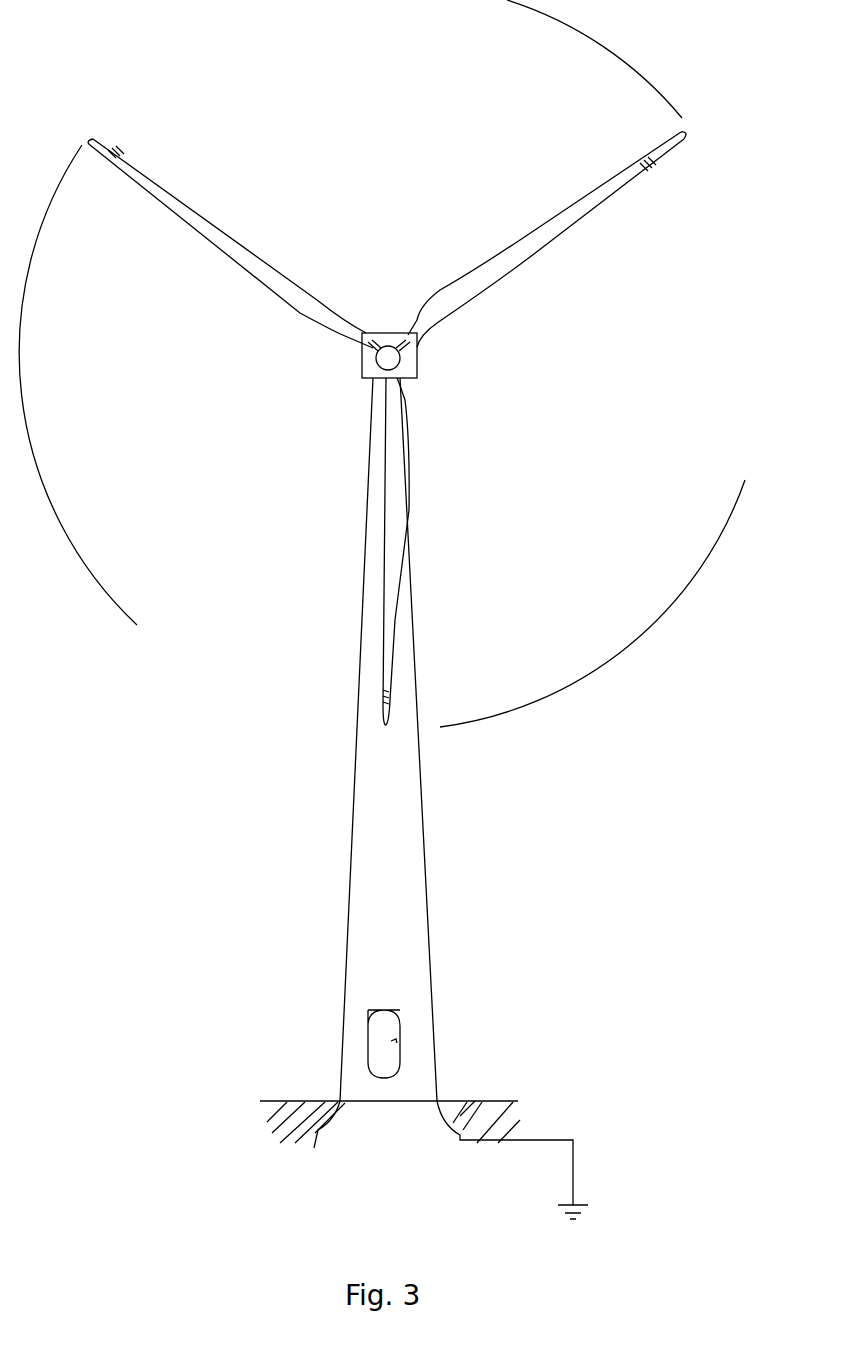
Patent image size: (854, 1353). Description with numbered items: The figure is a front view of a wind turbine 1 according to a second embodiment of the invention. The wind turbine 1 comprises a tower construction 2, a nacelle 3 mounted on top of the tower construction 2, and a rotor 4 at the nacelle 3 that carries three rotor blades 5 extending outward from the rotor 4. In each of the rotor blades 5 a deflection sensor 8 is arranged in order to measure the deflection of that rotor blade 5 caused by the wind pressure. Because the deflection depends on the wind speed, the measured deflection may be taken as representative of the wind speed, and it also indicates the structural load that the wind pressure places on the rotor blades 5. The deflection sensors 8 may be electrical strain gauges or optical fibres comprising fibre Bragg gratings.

The wind turbine 1 is at (645, 835).
The tower construction 2 is at (349, 930).
The nacelle 3 is at (410, 363).
The rotor 4 is at (390, 357).
The rotor blade 5 is at (280, 288).
The deflection sensor 8 is at (117, 157).